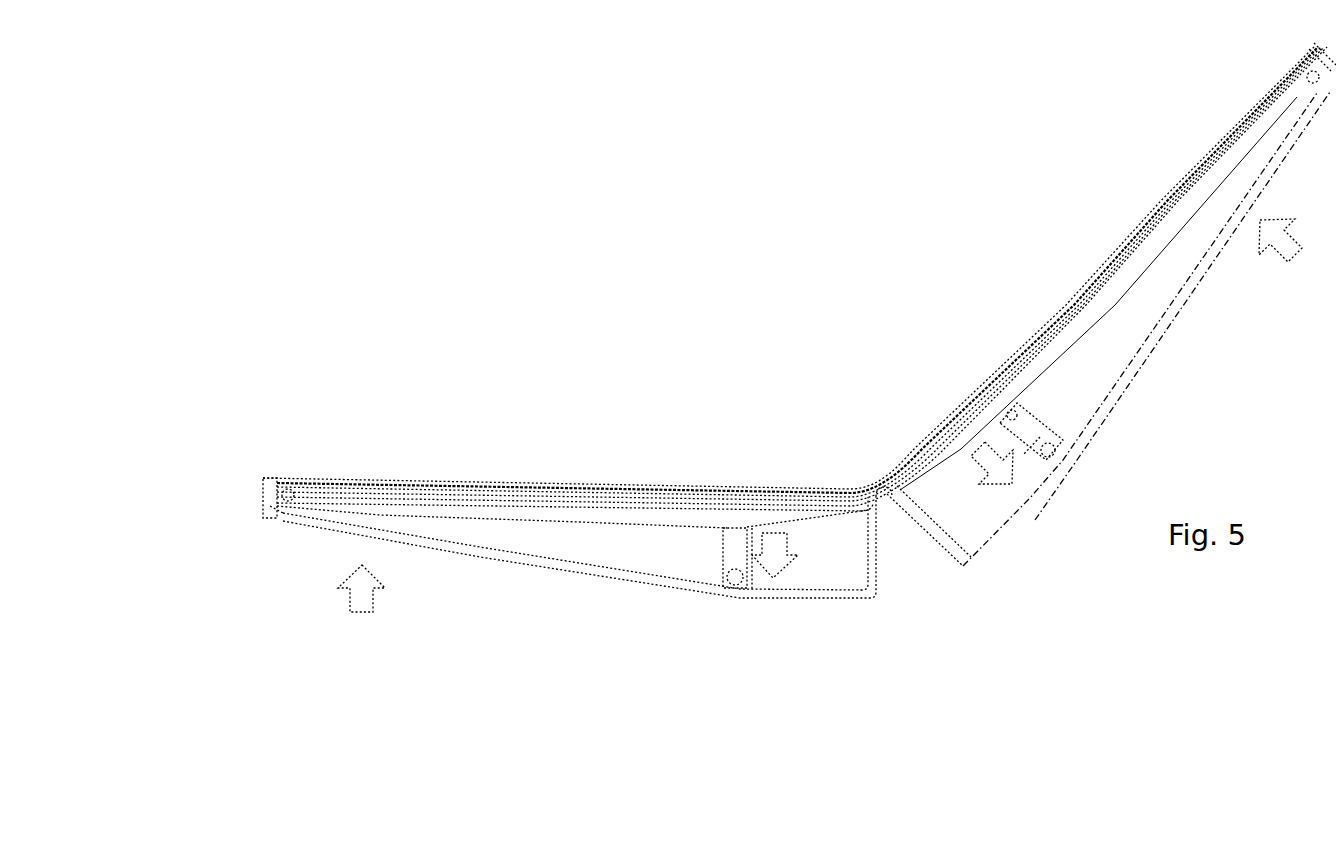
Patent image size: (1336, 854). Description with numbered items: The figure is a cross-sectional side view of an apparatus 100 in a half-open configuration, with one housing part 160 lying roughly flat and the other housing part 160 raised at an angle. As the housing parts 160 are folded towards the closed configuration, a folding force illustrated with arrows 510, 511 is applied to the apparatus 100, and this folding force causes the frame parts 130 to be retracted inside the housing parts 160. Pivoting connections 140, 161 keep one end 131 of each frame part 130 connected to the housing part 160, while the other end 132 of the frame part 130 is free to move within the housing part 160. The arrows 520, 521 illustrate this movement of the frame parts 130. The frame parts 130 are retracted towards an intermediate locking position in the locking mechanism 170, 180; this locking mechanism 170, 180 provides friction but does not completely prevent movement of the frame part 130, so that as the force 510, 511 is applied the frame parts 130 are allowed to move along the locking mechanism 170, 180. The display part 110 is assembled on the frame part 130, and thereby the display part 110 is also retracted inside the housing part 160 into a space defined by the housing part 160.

The apparatus 100 is at (937, 89).
The display part 110 is at (883, 468).
The frame part 130 is at (573, 507).
The one end of the frame part 131 is at (263, 490).
The other end of the frame part 132 is at (787, 512).
The pivoting connection 140 is at (233, 553).
The pivoting connection 161 is at (277, 498).
The housing part 160 is at (607, 557).
The locking mechanism 170 is at (688, 604).
The locking mechanism 180 is at (730, 563).
The arrow illustrating folding force 510 is at (347, 600).
The arrow illustrating folding force 511 is at (1278, 257).
The arrow illustrating movement of the frame part 520 is at (788, 570).
The arrow illustrating movement of the frame part 521 is at (1014, 468).